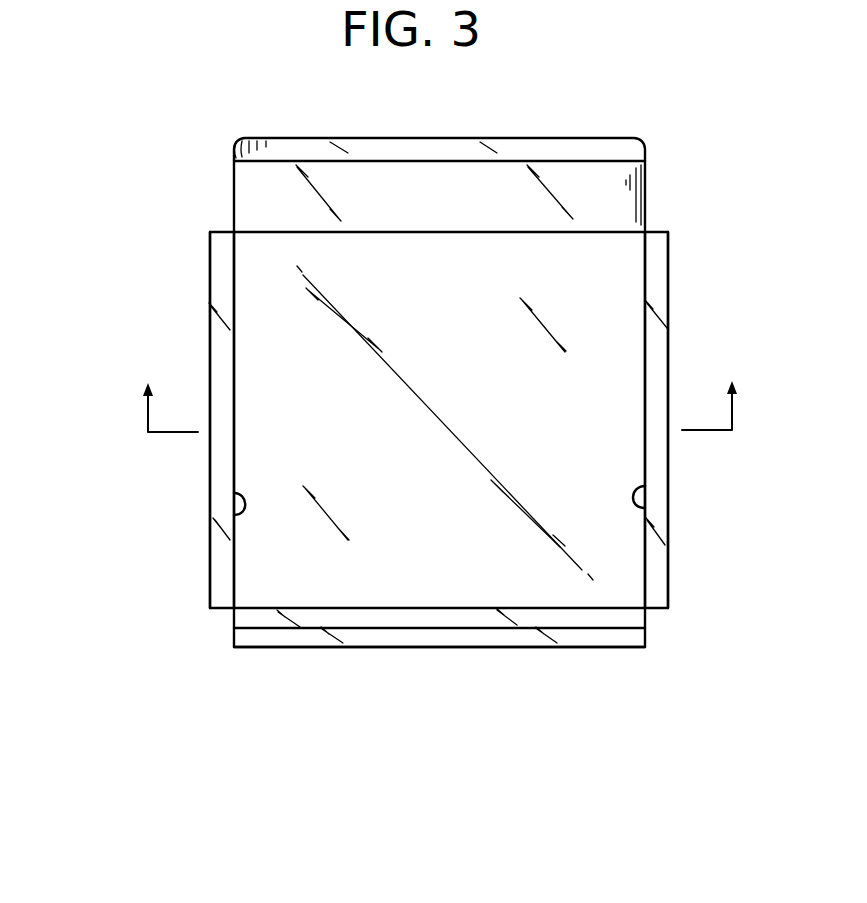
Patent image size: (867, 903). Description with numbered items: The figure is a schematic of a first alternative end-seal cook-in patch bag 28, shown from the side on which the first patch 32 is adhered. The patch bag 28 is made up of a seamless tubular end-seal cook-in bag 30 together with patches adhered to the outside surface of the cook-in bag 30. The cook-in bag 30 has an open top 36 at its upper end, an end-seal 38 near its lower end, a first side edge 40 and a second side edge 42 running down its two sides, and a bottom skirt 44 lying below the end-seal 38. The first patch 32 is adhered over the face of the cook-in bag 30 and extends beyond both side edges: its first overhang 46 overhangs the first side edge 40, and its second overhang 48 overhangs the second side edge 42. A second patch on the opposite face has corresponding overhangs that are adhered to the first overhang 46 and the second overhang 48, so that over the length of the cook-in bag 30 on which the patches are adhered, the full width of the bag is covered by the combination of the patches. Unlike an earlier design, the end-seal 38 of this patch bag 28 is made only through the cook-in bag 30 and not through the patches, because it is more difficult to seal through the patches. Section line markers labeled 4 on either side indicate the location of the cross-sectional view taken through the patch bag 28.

The alternative cook-in patch bag 28 is at (186, 214).
The seamless tubular end-seal cook-in bag 30 is at (618, 197).
The first patch 32 is at (612, 272).
The open top 36 is at (560, 147).
The end-seal 38 is at (567, 628).
The first side edge 40 is at (234, 493).
The second side edge 42 is at (645, 486).
The bottom skirt 44 is at (428, 636).
The first overhang 46 is at (222, 273).
The second overhang 48 is at (653, 342).
The section line for FIG. 4 is at (439, 391).